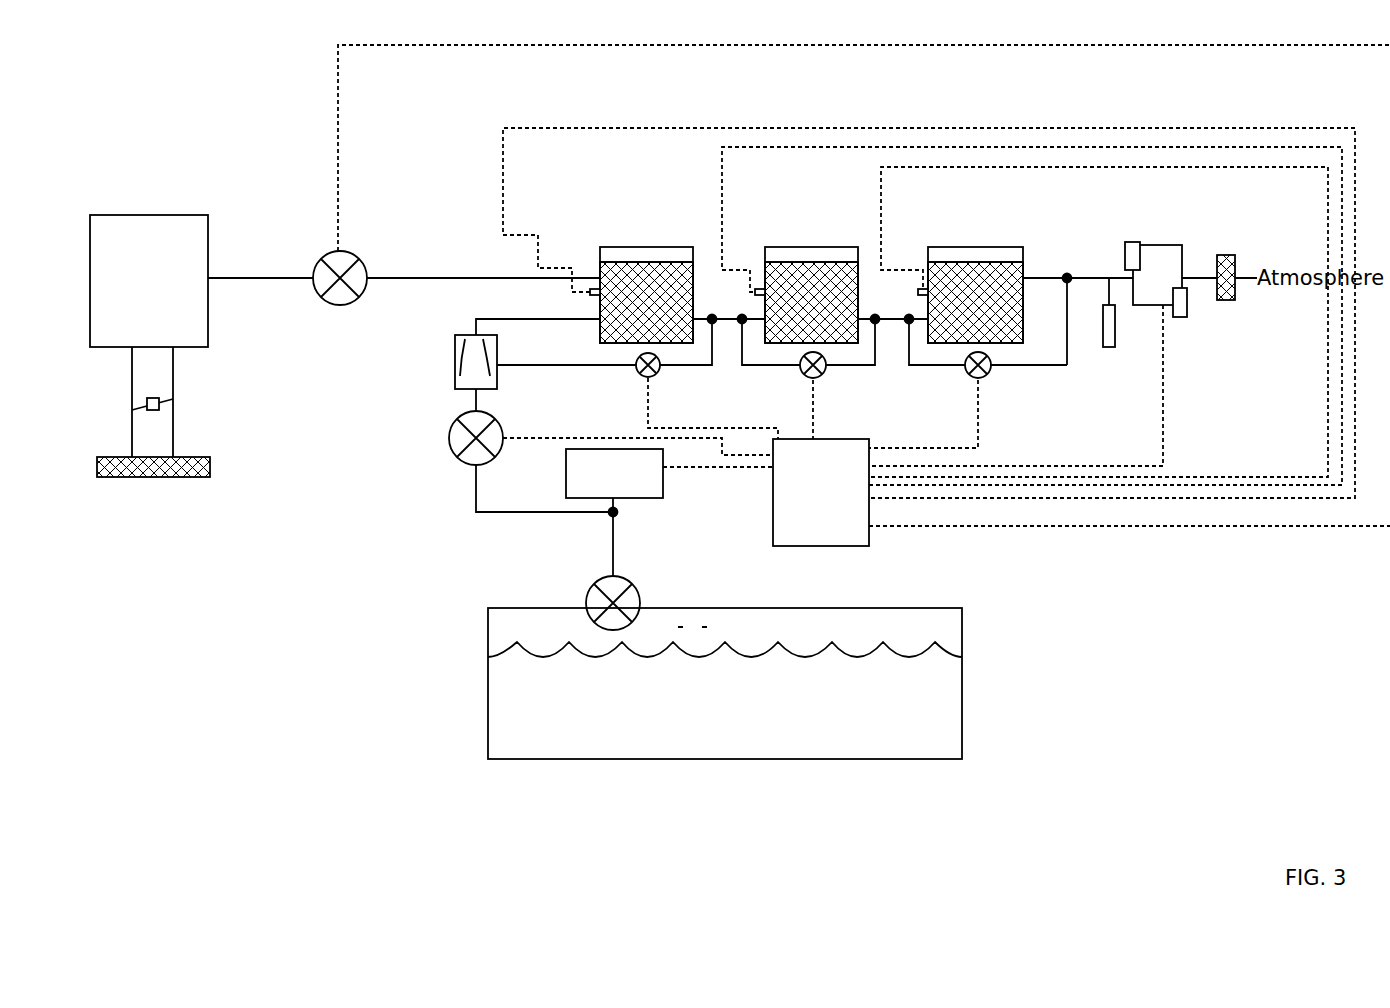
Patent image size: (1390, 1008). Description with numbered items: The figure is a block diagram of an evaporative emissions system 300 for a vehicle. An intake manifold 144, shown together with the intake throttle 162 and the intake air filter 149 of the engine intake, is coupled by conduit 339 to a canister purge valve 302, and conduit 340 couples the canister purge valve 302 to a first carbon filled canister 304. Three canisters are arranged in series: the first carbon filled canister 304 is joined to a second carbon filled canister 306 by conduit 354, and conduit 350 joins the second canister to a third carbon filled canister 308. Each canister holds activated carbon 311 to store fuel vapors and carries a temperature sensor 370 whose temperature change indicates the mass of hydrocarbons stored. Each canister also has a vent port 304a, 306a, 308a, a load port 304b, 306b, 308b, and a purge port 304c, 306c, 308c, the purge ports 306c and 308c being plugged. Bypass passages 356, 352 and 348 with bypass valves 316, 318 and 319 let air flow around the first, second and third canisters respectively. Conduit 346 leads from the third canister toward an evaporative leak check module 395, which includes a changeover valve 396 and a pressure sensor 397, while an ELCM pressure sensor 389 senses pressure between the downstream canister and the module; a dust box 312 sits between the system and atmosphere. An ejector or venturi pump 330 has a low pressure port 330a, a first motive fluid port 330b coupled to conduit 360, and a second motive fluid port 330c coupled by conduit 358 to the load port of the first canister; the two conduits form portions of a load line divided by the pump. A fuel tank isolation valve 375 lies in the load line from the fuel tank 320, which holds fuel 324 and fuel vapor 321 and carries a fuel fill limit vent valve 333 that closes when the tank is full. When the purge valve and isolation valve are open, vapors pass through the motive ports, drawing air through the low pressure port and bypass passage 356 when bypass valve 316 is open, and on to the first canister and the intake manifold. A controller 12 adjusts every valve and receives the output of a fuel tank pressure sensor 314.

The evaporative emissions system 300 is at (182, 100).
The intake manifold 144 is at (169, 291).
The conduit 339 is at (228, 278).
The canister purge valve 302 is at (338, 251).
The conduit 340 is at (368, 278).
The intake throttle 162 is at (162, 406).
The intake air filter 149 is at (100, 468).
The first carbon filled canister 304 is at (607, 247).
The vent port 304a is at (697, 305).
The load port 304b is at (593, 330).
The purge port 304c is at (598, 275).
The second carbon filled canister 306 is at (787, 247).
The vent port 306a is at (860, 313).
The load port 306b is at (757, 323).
The purge port 306c is at (765, 275).
The third carbon filled canister 308 is at (943, 247).
The vent port 308a is at (1025, 277).
The load port 308b is at (923, 323).
The purge port 308c is at (928, 270).
The activated carbon 311 is at (665, 308).
The temperature sensors 370 is at (592, 293).
The ejector 330 is at (455, 342).
The low pressure port 330a is at (497, 365).
The first motive fluid port 330b is at (476, 395).
The second motive fluid port 330c is at (476, 335).
The fuel tank isolation valve 375 is at (462, 463).
The conduit 358 is at (563, 322).
The bypass valve 316 is at (643, 377).
The bypass passage 356 is at (660, 368).
The conduit 354 is at (726, 322).
The bypass valve 318 is at (808, 378).
The bypass passage 352 is at (825, 372).
The conduit 350 is at (893, 323).
The bypass valve 319 is at (988, 373).
The bypass passage 348 is at (1012, 368).
The conduit 346 is at (1078, 277).
The ELCM pressure sensor 389 is at (1108, 347).
The evaporative leak check module 395 is at (1158, 245).
The changeover valve 396 is at (1133, 242).
The pressure sensor 397 is at (1183, 317).
The dust box 312 is at (1235, 260).
The fuel tank pressure sensor 314 is at (580, 483).
The conduit 360 is at (475, 512).
The fuel fill limit vent valve 333 is at (585, 608).
The fuel vapor 321 is at (708, 618).
The fuel tank 320 is at (962, 618).
The fuel 324 is at (947, 733).
The controller 12 is at (836, 504).